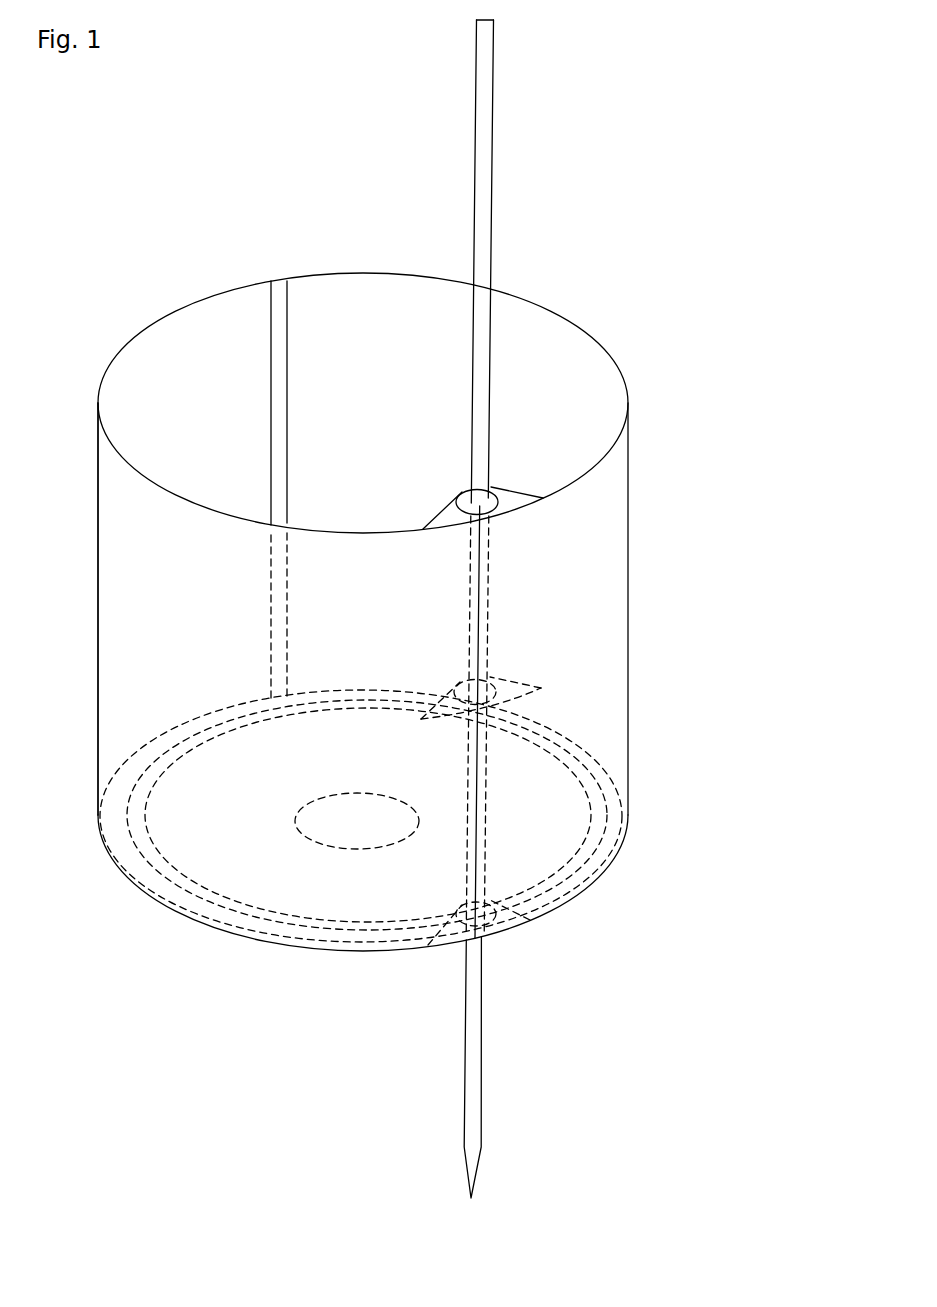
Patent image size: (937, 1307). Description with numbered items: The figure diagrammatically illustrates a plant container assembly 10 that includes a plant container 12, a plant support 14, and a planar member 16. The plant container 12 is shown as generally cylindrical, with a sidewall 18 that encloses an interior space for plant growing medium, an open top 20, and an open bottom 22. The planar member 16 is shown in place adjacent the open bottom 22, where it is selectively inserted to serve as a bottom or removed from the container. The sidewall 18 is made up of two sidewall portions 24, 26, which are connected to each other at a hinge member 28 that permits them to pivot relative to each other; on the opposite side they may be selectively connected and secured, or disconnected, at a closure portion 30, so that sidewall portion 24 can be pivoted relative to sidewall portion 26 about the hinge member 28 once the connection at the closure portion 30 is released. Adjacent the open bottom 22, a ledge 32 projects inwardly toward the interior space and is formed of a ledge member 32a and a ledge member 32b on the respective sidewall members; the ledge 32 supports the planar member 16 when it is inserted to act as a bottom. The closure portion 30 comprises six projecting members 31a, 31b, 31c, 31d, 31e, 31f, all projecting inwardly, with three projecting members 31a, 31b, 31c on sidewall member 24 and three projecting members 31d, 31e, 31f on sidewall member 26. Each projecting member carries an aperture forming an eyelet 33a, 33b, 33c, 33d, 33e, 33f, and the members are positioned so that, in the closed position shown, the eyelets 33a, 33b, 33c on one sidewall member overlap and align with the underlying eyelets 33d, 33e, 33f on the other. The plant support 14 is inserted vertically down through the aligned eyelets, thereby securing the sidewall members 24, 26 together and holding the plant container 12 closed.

The plant container assembly 10 is at (722, 150).
The plant container 12 is at (196, 611).
The plant support 14 is at (494, 163).
The planar member 16 is at (236, 824).
The sidewall 18 is at (94, 575).
The open top 20 is at (162, 312).
The open bottom 22 is at (318, 952).
The sidewall portion 24 is at (197, 404).
The sidewall portion 26 is at (378, 404).
The hinge member 28 is at (296, 290).
The closure portion 30 is at (494, 610).
The projecting member 31a is at (440, 516).
The projecting member 31b is at (447, 691).
The projecting member 31c is at (441, 918).
The projecting member 31d is at (519, 492).
The projecting member 31e is at (553, 666).
The projecting member 31f is at (494, 905).
The ledge 32 is at (357, 720).
The ledge member 32a is at (140, 789).
The ledge member 32b is at (590, 817).
The eyelet 33a is at (451, 466).
The eyelet 33b is at (527, 699).
The eyelet 33c is at (514, 929).
The eyelet 33d is at (462, 500).
The eyelet 33e is at (496, 686).
The eyelet 33f is at (486, 922).